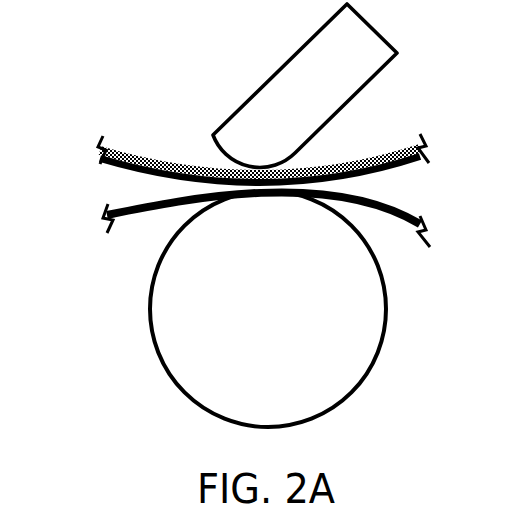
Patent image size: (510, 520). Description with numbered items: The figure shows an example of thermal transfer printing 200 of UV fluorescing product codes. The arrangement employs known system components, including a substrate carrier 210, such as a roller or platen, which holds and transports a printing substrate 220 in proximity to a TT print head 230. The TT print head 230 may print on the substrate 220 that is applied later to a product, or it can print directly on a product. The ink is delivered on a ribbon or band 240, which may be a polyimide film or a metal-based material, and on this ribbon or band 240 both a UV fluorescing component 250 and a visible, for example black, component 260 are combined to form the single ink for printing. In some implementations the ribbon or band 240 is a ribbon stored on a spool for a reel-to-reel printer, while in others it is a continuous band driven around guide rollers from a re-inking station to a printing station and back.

The thermal transfer printing 200 is at (135, 59).
The substrate carrier 210 is at (385, 312).
The printing substrate 220 is at (135, 205).
The TT print head 230 is at (287, 63).
The ribbon or band 240 is at (178, 162).
The UV fluorescing component 250 is at (358, 160).
The visible component 260 is at (366, 171).